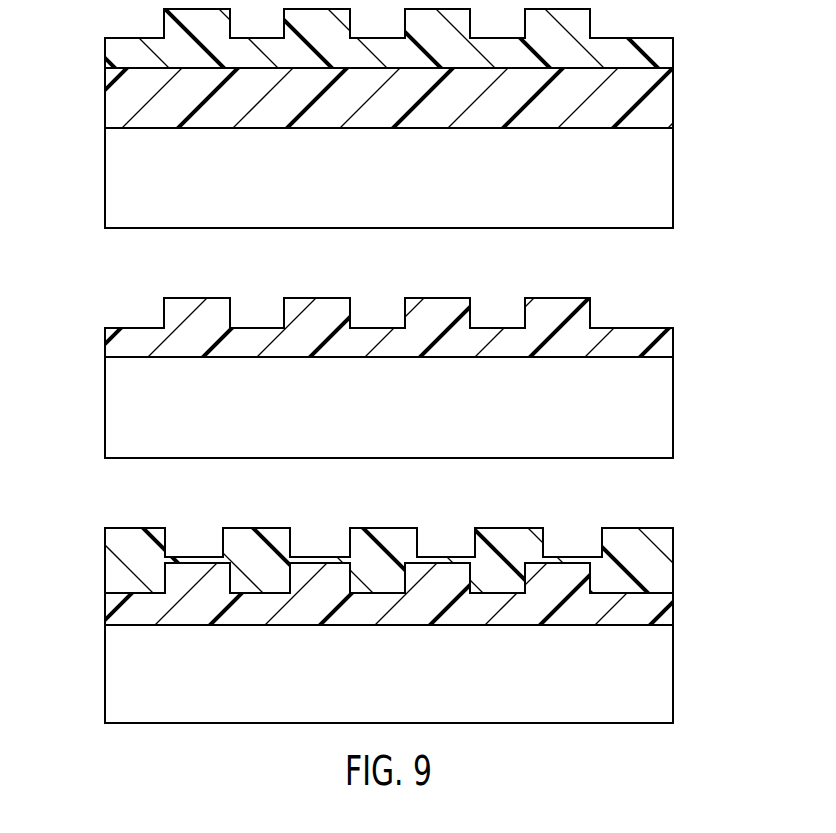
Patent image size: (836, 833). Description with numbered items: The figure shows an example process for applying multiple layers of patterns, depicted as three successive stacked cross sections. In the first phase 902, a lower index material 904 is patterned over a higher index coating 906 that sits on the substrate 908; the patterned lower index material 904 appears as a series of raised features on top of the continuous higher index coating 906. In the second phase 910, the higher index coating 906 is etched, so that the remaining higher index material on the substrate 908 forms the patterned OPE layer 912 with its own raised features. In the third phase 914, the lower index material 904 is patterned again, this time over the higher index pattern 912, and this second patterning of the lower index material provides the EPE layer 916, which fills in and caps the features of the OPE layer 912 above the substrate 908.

The first phase 902 is at (85, 10).
The lower index material 904 is at (663, 52).
The higher index coating 906 is at (663, 99).
The substrate 908 is at (663, 175).
The second phase 910 is at (85, 298).
The OPE layer 912 is at (663, 343).
The third phase 914 is at (85, 530).
The EPE layer 916 is at (663, 545).